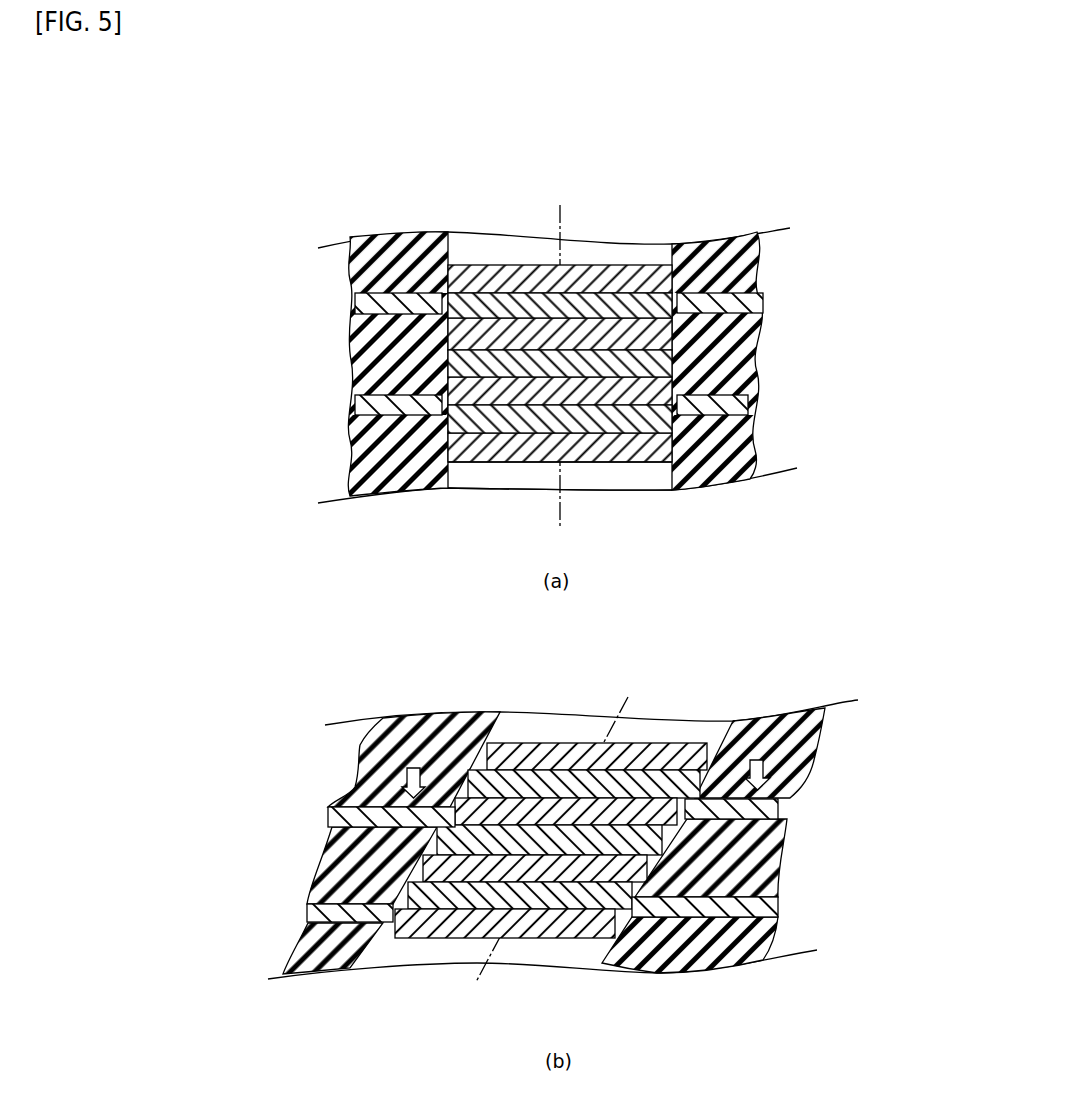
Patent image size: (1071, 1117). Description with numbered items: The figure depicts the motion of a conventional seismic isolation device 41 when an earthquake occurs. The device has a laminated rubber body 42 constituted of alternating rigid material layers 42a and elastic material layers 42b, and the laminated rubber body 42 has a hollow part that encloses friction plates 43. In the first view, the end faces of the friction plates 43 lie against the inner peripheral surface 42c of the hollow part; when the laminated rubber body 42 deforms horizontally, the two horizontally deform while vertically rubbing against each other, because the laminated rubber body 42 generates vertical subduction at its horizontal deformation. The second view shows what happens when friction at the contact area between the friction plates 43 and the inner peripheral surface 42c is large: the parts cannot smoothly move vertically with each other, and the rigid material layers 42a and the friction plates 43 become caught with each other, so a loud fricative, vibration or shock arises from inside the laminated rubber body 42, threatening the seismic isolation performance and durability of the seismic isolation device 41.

The seismic isolation device 41 is at (575, 175).
The laminated rubber body 42 is at (581, 598).
The rigid material layers 42a is at (758, 274).
The elastic material layers 42b is at (720, 378).
The inner peripheral surface 42c is at (670, 470).
The friction plates 43 is at (617, 265).